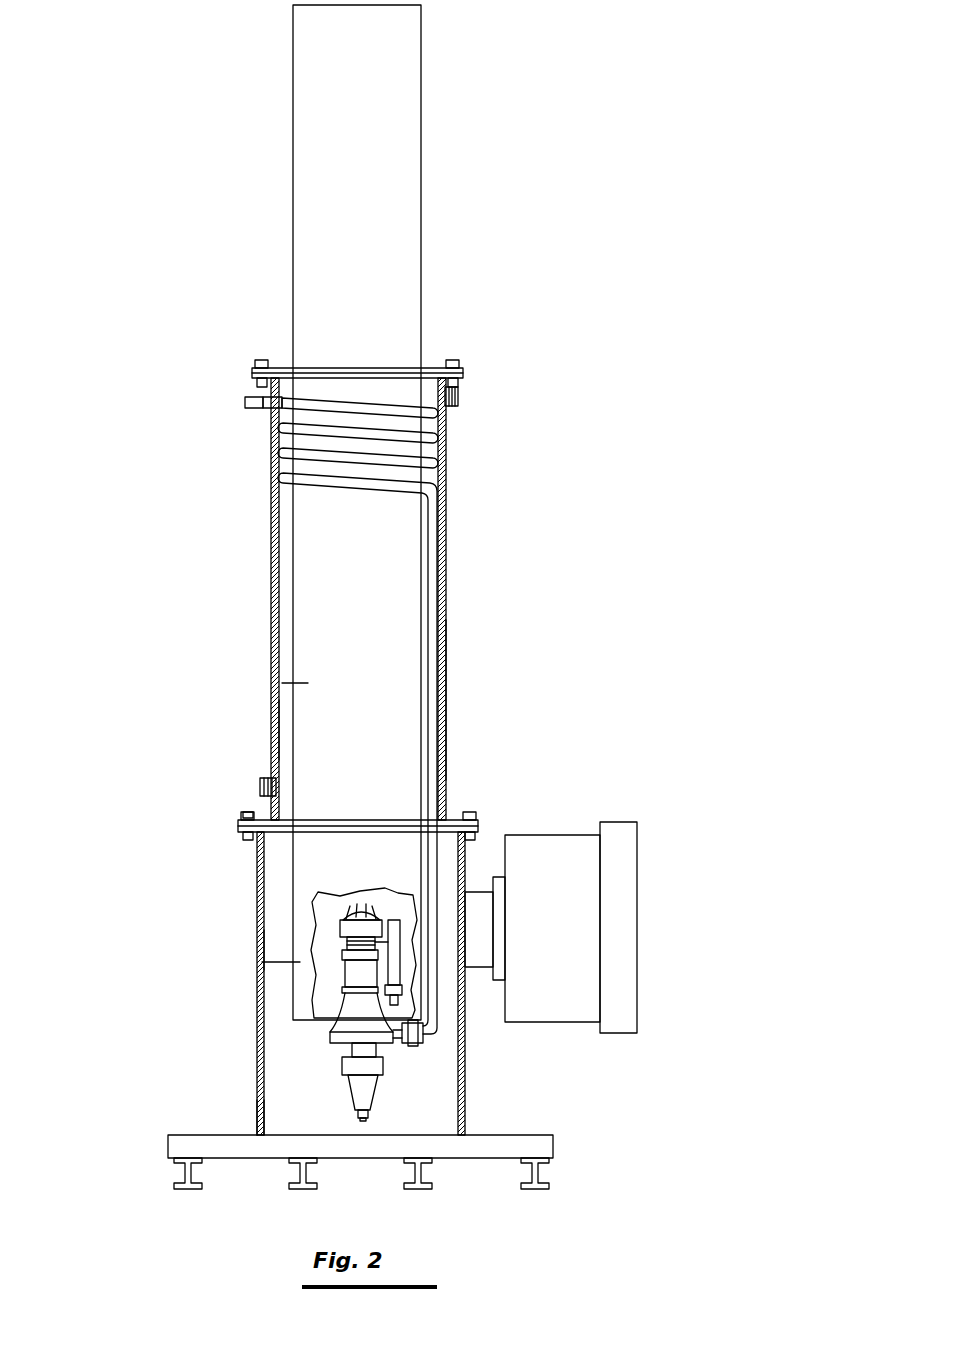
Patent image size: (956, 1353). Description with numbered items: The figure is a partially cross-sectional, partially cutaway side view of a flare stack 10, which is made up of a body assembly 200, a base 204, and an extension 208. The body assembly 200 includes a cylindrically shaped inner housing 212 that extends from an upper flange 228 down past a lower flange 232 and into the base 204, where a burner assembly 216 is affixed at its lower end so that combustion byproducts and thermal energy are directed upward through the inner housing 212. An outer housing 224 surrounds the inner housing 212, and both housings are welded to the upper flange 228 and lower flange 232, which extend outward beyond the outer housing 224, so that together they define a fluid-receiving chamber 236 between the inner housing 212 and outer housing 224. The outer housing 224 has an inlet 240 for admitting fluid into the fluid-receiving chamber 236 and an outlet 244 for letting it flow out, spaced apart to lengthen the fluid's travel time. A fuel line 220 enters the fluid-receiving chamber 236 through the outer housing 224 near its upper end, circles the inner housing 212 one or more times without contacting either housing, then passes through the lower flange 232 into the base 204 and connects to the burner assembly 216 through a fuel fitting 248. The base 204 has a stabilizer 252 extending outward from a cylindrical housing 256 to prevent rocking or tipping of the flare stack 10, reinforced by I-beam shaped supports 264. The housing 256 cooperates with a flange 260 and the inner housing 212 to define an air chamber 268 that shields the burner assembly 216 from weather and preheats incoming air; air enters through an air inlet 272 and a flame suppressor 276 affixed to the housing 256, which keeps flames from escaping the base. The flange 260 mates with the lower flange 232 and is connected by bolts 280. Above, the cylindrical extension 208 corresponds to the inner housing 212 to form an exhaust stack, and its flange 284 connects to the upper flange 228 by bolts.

The flare stack 10 is at (102, 245).
The body assembly 200 is at (272, 577).
The base 204 is at (258, 910).
The extension 208 is at (292, 120).
The inner housing 212 is at (282, 683).
The burner assembly 216 is at (358, 1009).
The fuel line 220 is at (437, 598).
The outer housing 224 is at (447, 708).
The upper flange 228 is at (463, 378).
The lower flange 232 is at (458, 812).
The fluid-receiving chamber 236 is at (279, 738).
The inlet 240 is at (265, 778).
The outlet 244 is at (455, 406).
The fuel fitting 248 is at (413, 1043).
The stabilizer 252 is at (168, 1143).
The housing 256 is at (258, 950).
The flange 260 is at (478, 828).
The supports 264 is at (543, 1172).
The air chamber 268 is at (258, 1130).
The air inlet 272 is at (460, 928).
The flame suppressor 276 is at (580, 835).
The bolts 280 is at (246, 813).
The flange 284 is at (437, 365).